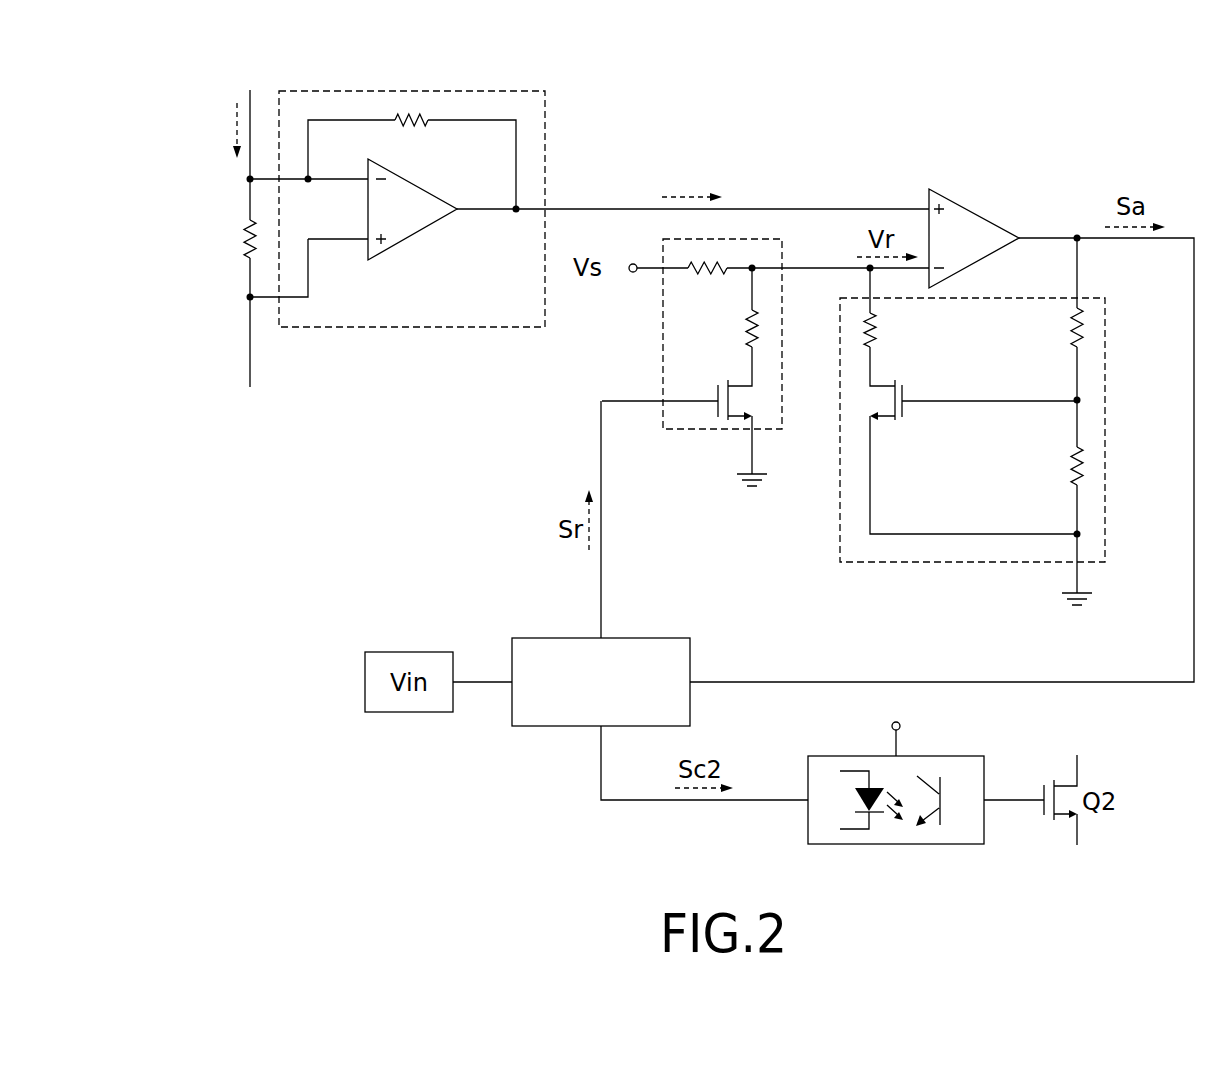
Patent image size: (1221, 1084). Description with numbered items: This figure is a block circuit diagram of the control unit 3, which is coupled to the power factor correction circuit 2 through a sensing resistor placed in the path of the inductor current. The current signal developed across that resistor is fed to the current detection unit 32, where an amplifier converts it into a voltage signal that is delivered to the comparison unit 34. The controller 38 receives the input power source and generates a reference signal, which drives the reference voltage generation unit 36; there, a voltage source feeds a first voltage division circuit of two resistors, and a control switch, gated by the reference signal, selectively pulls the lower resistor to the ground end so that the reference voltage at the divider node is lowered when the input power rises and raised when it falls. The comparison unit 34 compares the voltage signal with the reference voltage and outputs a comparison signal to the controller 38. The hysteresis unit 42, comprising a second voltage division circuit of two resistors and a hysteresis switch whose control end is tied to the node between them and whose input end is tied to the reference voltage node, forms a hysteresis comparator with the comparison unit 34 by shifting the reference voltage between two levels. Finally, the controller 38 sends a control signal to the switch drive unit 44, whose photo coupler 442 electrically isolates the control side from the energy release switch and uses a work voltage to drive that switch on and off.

The power factor correction circuit 2 is at (230, 201).
The control unit 3 is at (731, 73).
The current detection unit 32 is at (412, 98).
The comparison unit 34 is at (975, 219).
The reference voltage generation unit 36 is at (723, 425).
The controller 38 is at (588, 643).
The hysteresis unit 42 is at (972, 560).
The switch drive unit 44 is at (908, 790).
The photo coupler 442 is at (903, 825).